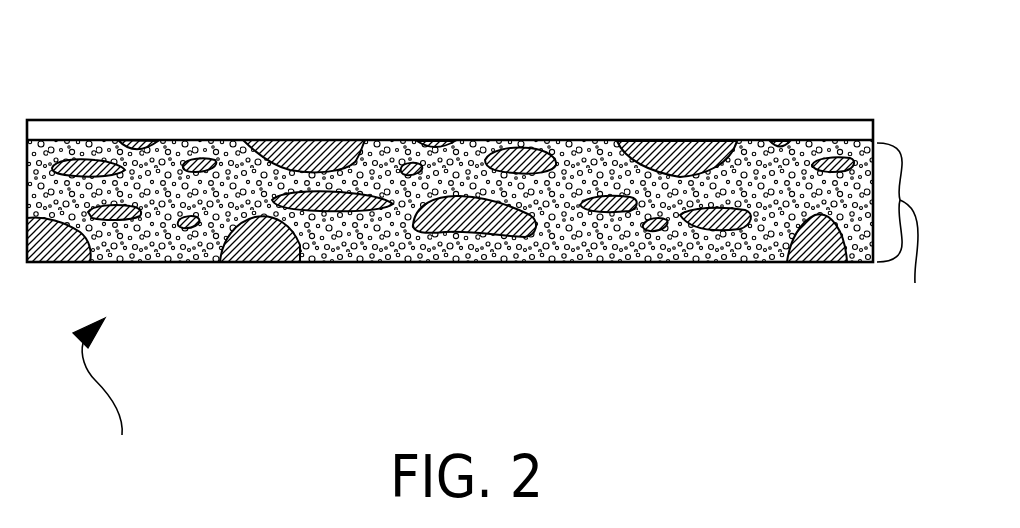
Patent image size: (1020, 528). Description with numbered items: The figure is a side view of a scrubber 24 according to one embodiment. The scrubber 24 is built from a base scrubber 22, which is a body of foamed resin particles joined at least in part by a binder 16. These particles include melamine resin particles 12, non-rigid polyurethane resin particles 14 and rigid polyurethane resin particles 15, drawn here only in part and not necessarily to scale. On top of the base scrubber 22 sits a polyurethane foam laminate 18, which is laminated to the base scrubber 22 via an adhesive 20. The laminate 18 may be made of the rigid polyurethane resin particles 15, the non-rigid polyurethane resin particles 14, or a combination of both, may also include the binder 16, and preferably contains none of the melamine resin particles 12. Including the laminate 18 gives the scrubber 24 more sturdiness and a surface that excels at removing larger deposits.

The melamine resin particles 12 is at (343, 214).
The non-rigid polyurethane resin particles 14 is at (492, 218).
The rigid polyurethane resin particles 15 is at (657, 232).
The binder 16 is at (411, 240).
The polyurethane foam laminate 18 is at (685, 130).
The adhesive 20 is at (185, 139).
The base scrubber 22 is at (908, 233).
The scrubber 24 is at (105, 399).